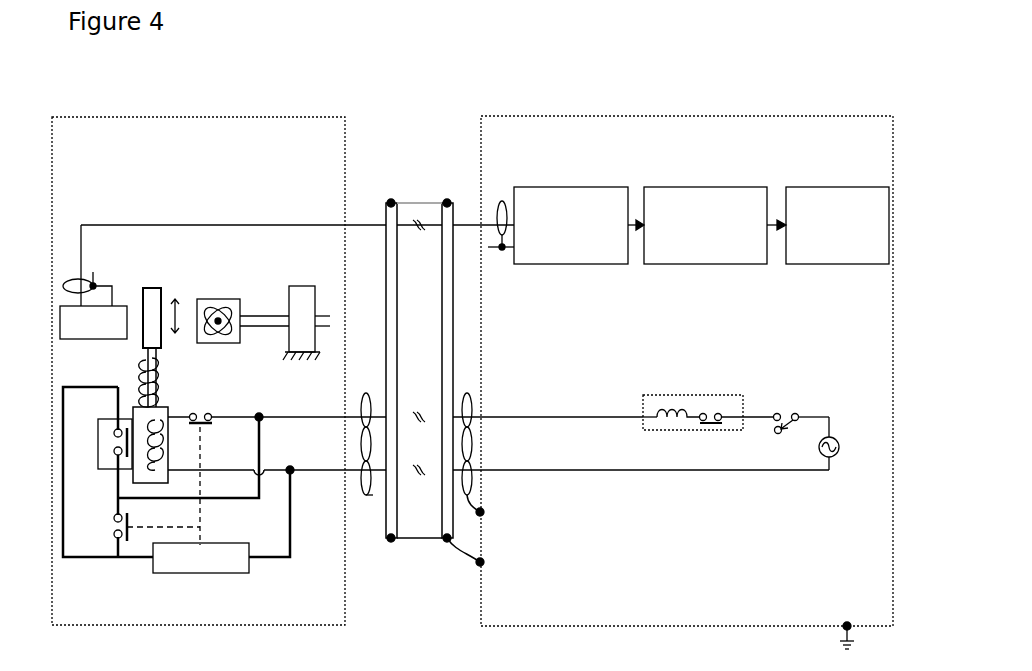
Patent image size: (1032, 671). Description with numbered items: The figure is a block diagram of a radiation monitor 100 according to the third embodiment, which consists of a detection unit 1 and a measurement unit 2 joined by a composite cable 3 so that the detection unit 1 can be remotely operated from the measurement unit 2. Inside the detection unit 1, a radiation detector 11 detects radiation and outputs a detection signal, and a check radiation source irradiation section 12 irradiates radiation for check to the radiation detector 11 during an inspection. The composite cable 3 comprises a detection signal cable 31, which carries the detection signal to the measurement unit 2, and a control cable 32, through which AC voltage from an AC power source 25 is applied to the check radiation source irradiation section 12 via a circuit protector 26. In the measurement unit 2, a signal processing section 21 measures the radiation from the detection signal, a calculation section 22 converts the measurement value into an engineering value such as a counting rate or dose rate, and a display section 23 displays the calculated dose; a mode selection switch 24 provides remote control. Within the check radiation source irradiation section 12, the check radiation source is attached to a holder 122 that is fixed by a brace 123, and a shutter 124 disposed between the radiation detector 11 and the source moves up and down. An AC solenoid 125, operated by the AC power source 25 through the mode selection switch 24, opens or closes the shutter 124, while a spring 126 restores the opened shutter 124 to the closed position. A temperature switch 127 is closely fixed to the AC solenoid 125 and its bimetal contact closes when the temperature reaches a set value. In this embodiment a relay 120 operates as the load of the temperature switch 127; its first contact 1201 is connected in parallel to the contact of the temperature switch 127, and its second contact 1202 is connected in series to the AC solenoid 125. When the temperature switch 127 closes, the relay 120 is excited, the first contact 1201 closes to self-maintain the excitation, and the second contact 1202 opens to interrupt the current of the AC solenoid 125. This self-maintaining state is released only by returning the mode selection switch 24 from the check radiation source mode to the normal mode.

The radiation monitor 100 is at (825, 26).
The detection unit 1 is at (283, 117).
The measurement unit 2 is at (815, 116).
The composite cable 3 is at (409, 540).
The radiation detector 11 is at (95, 340).
The check radiation source irradiation section 12 is at (318, 612).
The signal processing section 21 is at (560, 187).
The calculation section 22 is at (688, 187).
The display section 23 is at (822, 187).
The mode selection switch 24 is at (787, 411).
The AC power source 25 is at (840, 440).
The circuit protector 26 is at (685, 395).
The detection signal cable 31 is at (368, 216).
The control cable 32 is at (367, 392).
The relay 120 is at (200, 573).
The holder 122 is at (210, 299).
The brace 123 is at (293, 286).
The shutter 124 is at (151, 288).
The AC solenoid 125 is at (168, 407).
The spring 126 is at (165, 380).
The temperature switch 127 is at (99, 440).
The first contact 1201 is at (114, 518).
The second contact 1202 is at (201, 426).